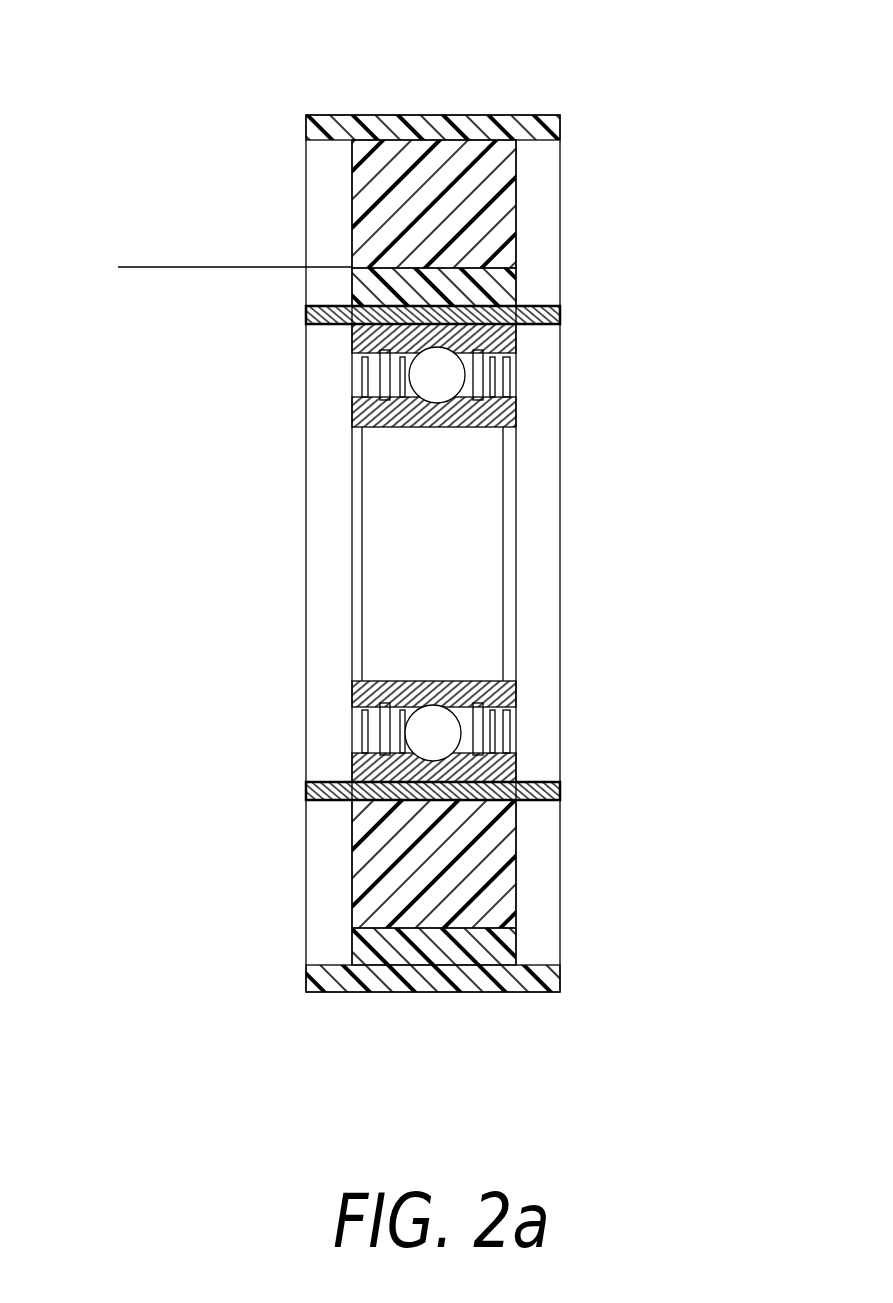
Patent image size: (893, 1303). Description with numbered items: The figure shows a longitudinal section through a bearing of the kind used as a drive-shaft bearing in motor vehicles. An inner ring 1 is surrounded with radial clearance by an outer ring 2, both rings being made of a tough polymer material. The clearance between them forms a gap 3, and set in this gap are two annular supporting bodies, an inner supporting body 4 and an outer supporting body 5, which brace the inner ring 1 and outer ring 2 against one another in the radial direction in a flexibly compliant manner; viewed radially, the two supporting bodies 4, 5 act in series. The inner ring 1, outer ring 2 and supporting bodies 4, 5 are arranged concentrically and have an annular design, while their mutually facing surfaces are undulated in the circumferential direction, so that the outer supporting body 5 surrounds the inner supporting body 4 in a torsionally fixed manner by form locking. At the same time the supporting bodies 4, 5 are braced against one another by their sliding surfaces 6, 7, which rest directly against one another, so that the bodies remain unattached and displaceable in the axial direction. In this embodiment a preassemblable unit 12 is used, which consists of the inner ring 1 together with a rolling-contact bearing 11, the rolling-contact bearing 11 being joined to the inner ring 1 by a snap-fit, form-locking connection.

The inner ring 1 is at (340, 324).
The outer ring 2 is at (479, 122).
The gap 3 is at (540, 232).
The inner supporting body 4 is at (502, 292).
The outer supporting body 5 is at (500, 182).
The sliding surface 6 is at (194, 266).
The sliding surface 7 is at (152, 268).
The rolling-contact bearing 11 is at (440, 735).
The preassemblable unit 12 is at (352, 698).